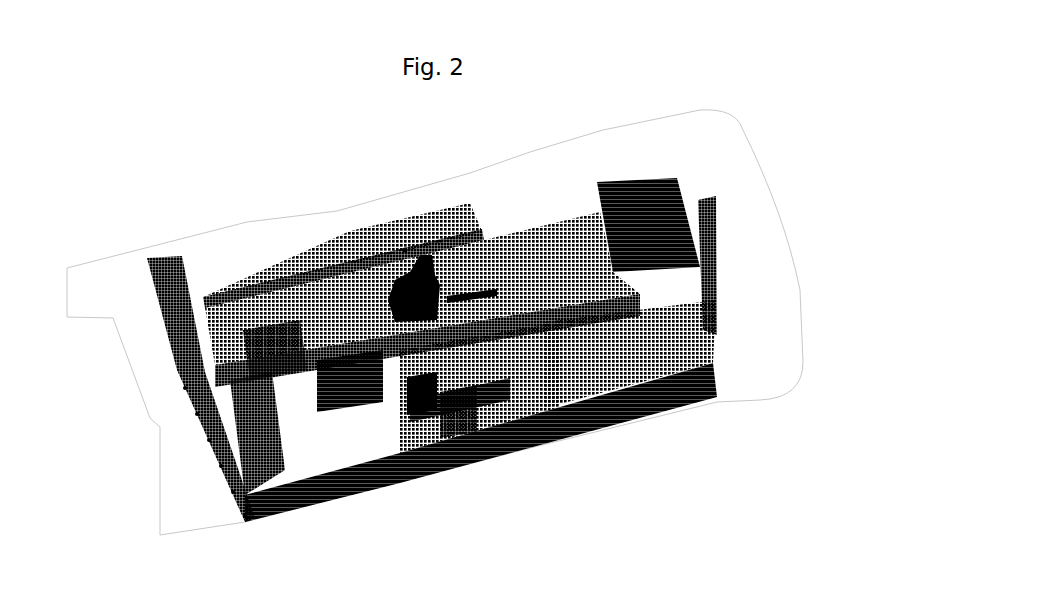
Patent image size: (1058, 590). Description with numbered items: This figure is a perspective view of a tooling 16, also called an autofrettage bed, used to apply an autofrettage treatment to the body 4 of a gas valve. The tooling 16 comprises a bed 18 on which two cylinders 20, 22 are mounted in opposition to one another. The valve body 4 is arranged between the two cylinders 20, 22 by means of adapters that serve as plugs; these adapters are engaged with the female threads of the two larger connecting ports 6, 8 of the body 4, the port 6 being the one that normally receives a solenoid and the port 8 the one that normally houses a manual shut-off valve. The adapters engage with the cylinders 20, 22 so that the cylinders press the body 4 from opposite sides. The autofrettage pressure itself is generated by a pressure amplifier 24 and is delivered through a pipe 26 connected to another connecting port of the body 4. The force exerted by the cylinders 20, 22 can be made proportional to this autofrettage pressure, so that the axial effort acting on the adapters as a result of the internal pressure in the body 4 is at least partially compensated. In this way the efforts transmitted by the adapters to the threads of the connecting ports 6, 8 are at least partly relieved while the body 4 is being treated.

The tooling 16 is at (692, 59).
The valve body 4 is at (339, 161).
The cylinder 20 is at (311, 297).
The cylinder 22 is at (533, 240).
The pipe 26 is at (405, 248).
The connecting port 6 is at (405, 295).
The connecting port 8 is at (462, 300).
The pressure amplifier 24 is at (528, 392).
The bed 18 is at (465, 448).